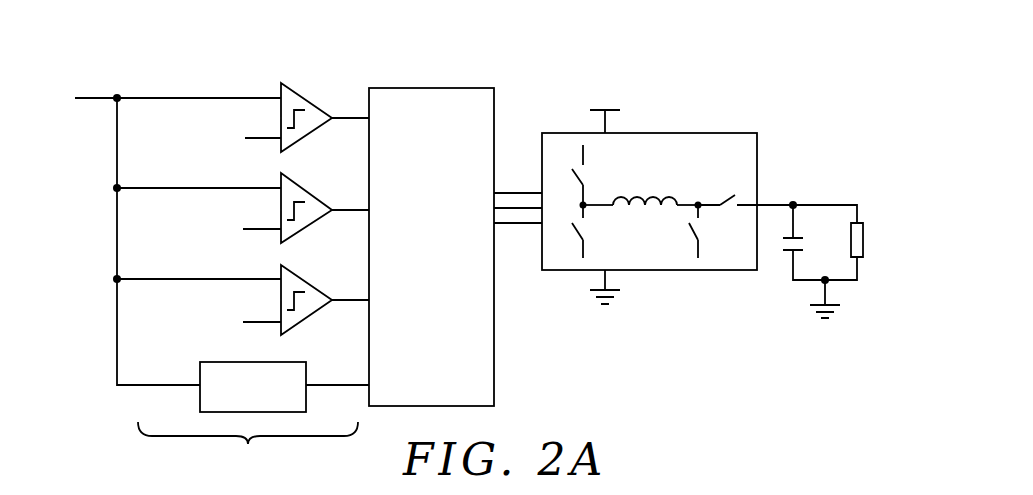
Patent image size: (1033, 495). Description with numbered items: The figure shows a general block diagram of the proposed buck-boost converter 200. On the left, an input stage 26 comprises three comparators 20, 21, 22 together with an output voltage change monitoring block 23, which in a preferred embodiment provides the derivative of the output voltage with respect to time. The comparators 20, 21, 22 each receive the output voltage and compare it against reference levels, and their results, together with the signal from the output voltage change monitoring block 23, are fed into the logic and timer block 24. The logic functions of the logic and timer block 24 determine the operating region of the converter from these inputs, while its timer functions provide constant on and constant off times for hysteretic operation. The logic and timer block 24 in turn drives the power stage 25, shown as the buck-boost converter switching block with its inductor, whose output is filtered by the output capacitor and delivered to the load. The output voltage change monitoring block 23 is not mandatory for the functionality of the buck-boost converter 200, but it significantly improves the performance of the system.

The comparator 20 is at (319, 108).
The comparator 21 is at (319, 200).
The comparator 22 is at (319, 290).
The output voltage change monitoring block 23 is at (306, 373).
The logic and timer block 24 is at (448, 88).
The buck boost converter 25 is at (667, 270).
The input stage 26 is at (248, 446).
The buck-boost converter 200 is at (791, 57).